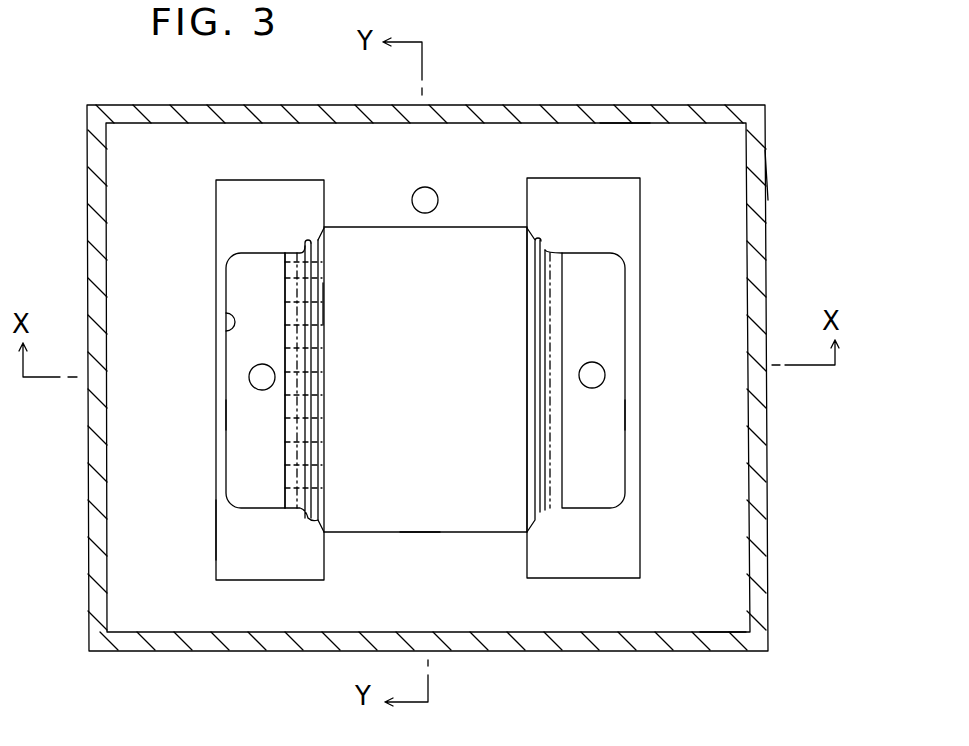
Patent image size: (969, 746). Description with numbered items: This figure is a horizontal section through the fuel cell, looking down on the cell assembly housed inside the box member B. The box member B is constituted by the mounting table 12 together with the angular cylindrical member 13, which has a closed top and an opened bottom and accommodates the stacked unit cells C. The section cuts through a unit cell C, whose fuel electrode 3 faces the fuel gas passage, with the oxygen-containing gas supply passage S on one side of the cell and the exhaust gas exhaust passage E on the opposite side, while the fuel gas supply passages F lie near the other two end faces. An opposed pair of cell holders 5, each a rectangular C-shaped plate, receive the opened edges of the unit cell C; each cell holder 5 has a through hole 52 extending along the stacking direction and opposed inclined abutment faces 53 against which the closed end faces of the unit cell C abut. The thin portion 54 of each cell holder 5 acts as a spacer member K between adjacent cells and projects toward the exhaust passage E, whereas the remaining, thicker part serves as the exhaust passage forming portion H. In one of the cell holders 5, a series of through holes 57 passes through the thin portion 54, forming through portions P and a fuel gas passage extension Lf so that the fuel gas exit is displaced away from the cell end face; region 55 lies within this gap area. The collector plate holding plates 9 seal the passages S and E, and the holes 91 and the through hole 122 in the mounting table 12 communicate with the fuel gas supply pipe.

The fuel electrode 3 is at (378, 226).
The cell holder 5 is at (212, 207).
The collector plate holding plate 9 is at (242, 466).
The mounting table 12 is at (683, 612).
The angular cylindrical member 13 is at (765, 512).
The through hole 52 is at (236, 319).
The abutment face 53 is at (322, 232).
The thin portion 54 is at (283, 273).
The gap layer region 55 is at (314, 410).
The through hole 57 is at (323, 325).
The hole 91 is at (249, 378).
The through hole 122 is at (436, 196).
The box member B is at (777, 164).
The unit cell C is at (419, 543).
The exhaust gas exhaust passage E is at (247, 422).
The fuel gas supply passage F is at (625, 138).
The exhaust passage forming portion H is at (217, 529).
The oxygen-containing gas supply passage S is at (616, 434).